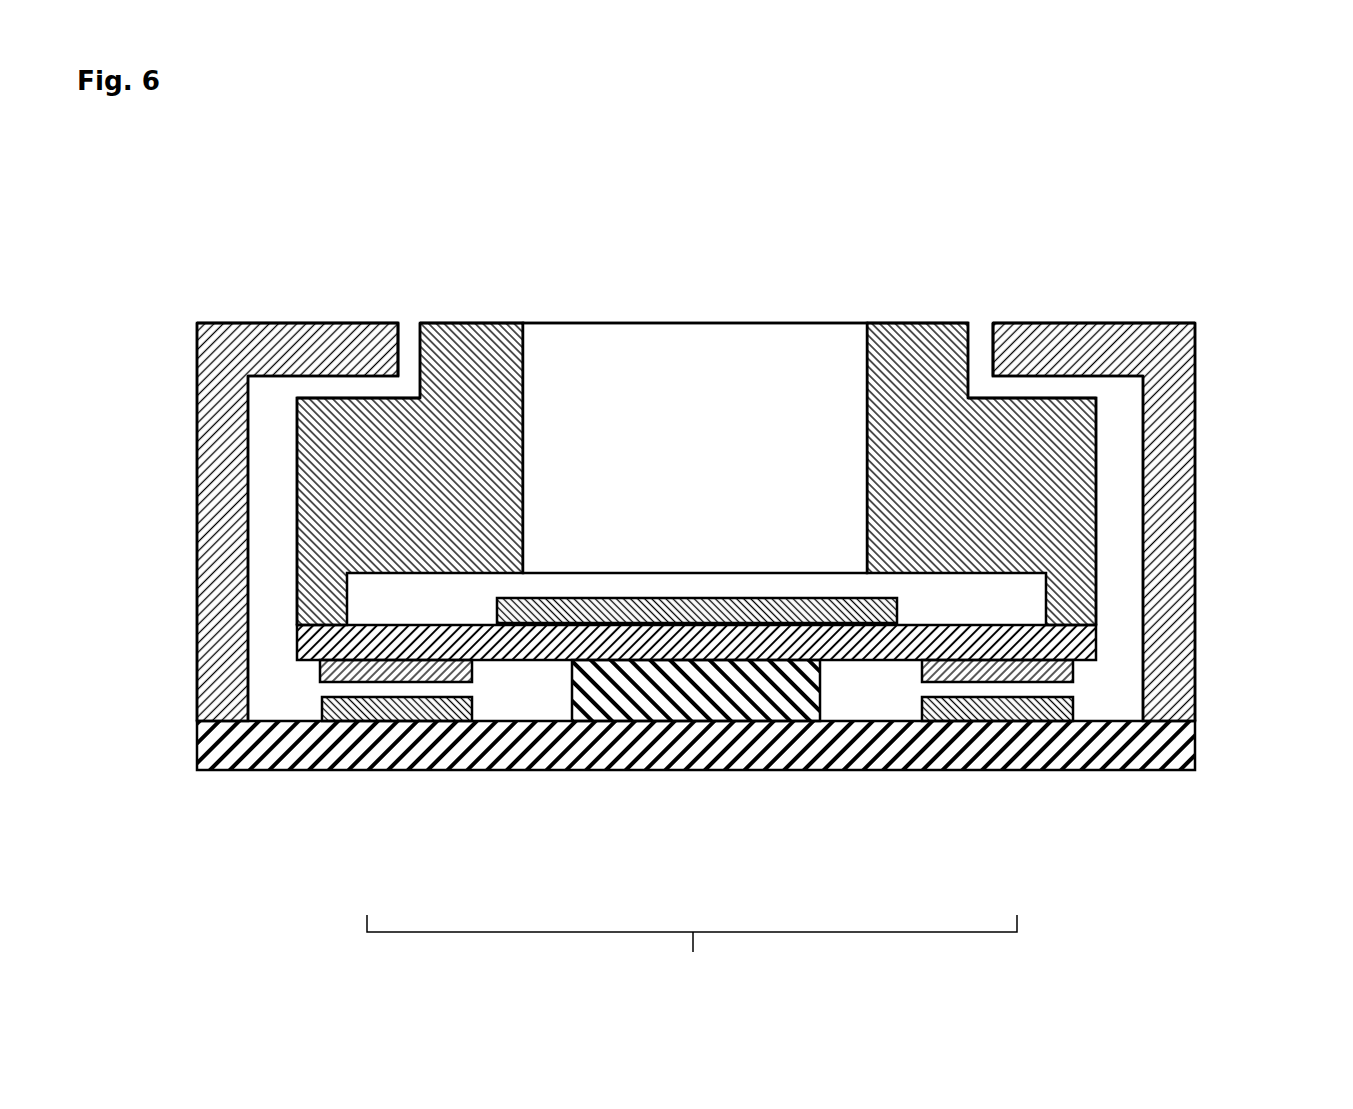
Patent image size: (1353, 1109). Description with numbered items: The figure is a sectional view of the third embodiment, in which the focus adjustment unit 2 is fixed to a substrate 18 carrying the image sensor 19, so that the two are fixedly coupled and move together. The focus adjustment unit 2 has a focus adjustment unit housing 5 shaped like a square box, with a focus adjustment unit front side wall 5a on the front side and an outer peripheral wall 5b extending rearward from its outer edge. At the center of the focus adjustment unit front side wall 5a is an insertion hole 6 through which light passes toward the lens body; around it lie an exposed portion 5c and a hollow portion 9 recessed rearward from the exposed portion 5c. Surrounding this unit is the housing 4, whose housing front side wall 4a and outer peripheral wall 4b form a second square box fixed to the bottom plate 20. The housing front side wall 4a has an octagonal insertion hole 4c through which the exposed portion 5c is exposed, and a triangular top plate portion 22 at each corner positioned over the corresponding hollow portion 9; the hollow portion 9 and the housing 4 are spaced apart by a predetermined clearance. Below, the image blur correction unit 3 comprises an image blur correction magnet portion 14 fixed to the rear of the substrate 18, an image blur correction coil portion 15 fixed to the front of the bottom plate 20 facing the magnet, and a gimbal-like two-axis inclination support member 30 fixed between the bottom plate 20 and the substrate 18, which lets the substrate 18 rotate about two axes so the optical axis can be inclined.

The focus adjustment unit 2 is at (708, 304).
The image blur correction unit 3 is at (692, 953).
The housing 4 is at (1222, 337).
The housing front side wall 4a is at (210, 308).
The outer peripheral wall 4b is at (1178, 430).
The insertion hole 4c is at (412, 323).
The focus adjustment unit housing 5 is at (1111, 505).
The focus adjustment unit front side wall 5a is at (486, 312).
The outer peripheral wall 5b is at (297, 448).
The exposed portion 5c is at (455, 325).
The insertion hole 6 is at (655, 380).
The hollow portion 9 is at (373, 398).
The image blur correction magnet portion 14 is at (437, 673).
The image blur correction coil portion 15 is at (385, 710).
The substrate 18 is at (640, 645).
The image sensor 19 is at (706, 610).
The bottom plate 20 is at (1173, 743).
The top plate portion 22 is at (290, 323).
The two-axis inclination support member 30 is at (747, 687).